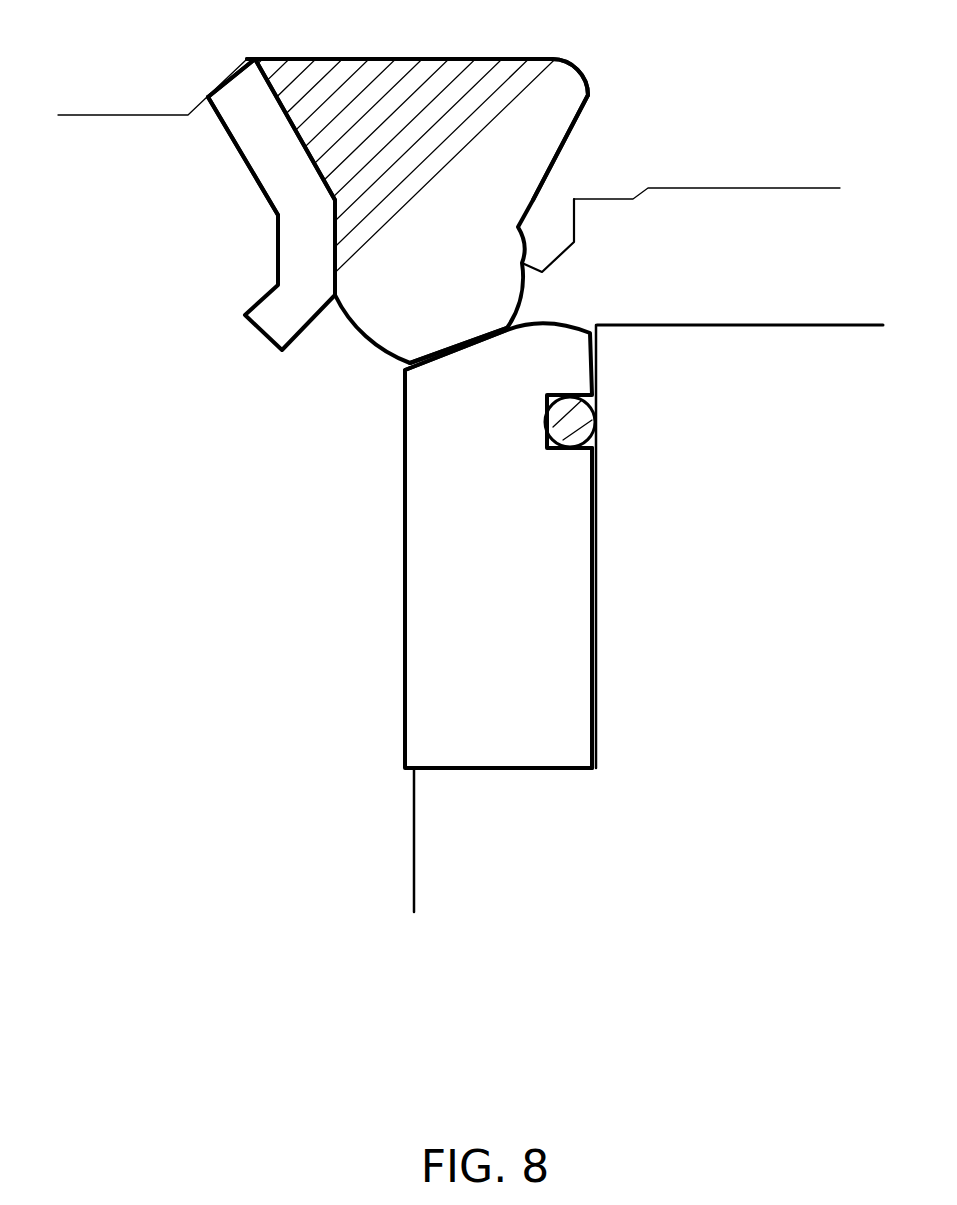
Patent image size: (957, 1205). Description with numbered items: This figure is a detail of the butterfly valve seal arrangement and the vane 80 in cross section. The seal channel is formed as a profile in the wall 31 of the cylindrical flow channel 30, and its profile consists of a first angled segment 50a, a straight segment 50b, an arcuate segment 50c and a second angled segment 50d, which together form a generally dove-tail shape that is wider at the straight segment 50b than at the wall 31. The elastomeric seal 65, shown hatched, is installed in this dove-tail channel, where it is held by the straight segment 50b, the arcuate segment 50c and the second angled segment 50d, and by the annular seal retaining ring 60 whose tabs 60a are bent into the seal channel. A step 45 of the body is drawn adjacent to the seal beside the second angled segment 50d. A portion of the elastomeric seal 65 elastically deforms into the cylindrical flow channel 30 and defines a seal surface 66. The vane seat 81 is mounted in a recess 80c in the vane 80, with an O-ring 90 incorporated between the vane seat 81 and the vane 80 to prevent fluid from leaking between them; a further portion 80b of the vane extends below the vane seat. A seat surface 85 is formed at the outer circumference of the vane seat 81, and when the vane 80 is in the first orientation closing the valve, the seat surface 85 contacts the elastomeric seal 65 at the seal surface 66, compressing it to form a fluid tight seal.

The cylindrical flow channel 30 is at (470, 413).
The wall 31 is at (110, 115).
The housing step 45 is at (577, 237).
The elastomeric seal 65 is at (427, 181).
The first angled segment 50a is at (218, 86).
The straight segment 50b is at (420, 59).
The arcuate segment 50c is at (587, 82).
The second angled segment 50d is at (573, 138).
The seal surface 66 is at (437, 357).
The annular seal retaining ring 60 is at (247, 204).
The tabs 60a is at (232, 132).
The vane 80 is at (596, 617).
The vane seat 81 is at (491, 575).
The seat surface 85 is at (462, 347).
The recess 80c is at (600, 557).
The plunger rod 80b is at (417, 860).
The O-ring 90 is at (590, 437).